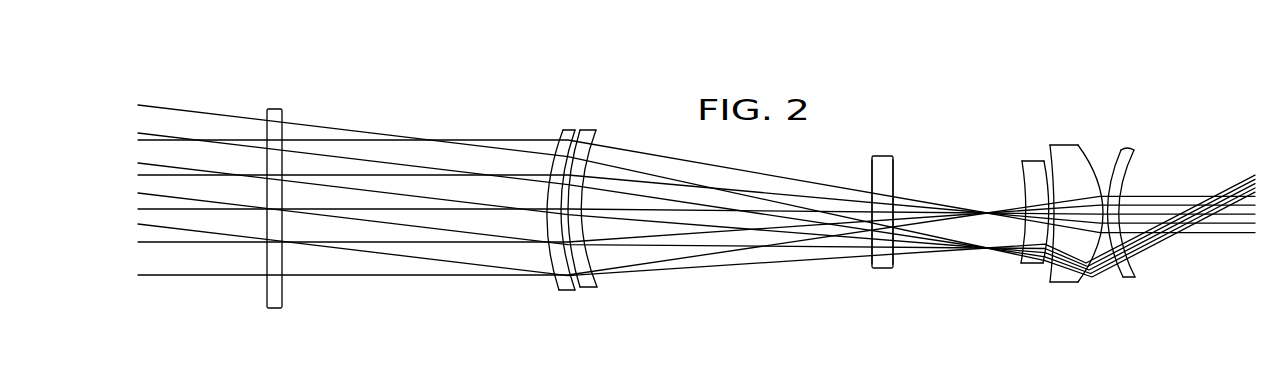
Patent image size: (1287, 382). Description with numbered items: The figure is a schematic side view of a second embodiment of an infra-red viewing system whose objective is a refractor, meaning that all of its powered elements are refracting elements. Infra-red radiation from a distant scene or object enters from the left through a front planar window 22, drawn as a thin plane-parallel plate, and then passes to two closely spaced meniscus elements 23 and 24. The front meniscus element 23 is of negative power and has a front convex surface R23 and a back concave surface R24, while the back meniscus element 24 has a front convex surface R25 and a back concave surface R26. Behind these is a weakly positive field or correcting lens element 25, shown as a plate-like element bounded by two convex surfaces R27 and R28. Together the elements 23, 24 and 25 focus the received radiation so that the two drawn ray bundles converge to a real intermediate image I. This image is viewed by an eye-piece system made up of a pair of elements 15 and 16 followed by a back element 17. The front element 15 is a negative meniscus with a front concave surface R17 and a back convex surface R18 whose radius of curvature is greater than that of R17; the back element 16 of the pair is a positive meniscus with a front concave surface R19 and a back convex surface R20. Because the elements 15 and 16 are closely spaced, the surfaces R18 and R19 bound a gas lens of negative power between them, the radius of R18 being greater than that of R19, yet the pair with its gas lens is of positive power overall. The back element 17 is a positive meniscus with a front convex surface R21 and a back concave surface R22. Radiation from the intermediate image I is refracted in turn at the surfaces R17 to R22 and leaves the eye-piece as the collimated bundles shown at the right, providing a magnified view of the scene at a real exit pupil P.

The front planar window 22 is at (274, 111).
The meniscus element 23 is at (554, 222).
The meniscus element 24 is at (617, 198).
The field or correcting lens element 25 is at (879, 209).
The front element 15 is at (1019, 223).
The back element of the pair 16 is at (1076, 218).
The back element 17 is at (1153, 215).
The intermediate image I is at (988, 197).
The real exit pupil P is at (1212, 240).
The front concave surface R17 is at (1018, 245).
The back convex surface R18 is at (1048, 252).
The front concave surface R19 is at (1044, 163).
The back convex surface R20 is at (1103, 264).
The front convex surface R21 is at (1117, 162).
The back concave surface R22 is at (1133, 176).
The front convex surface R23 is at (544, 267).
The back concave surface R24 is at (577, 282).
The front convex surface R25 is at (582, 130).
The back concave surface R26 is at (606, 268).
The convex surface R27 is at (870, 252).
The convex surface R28 is at (897, 252).